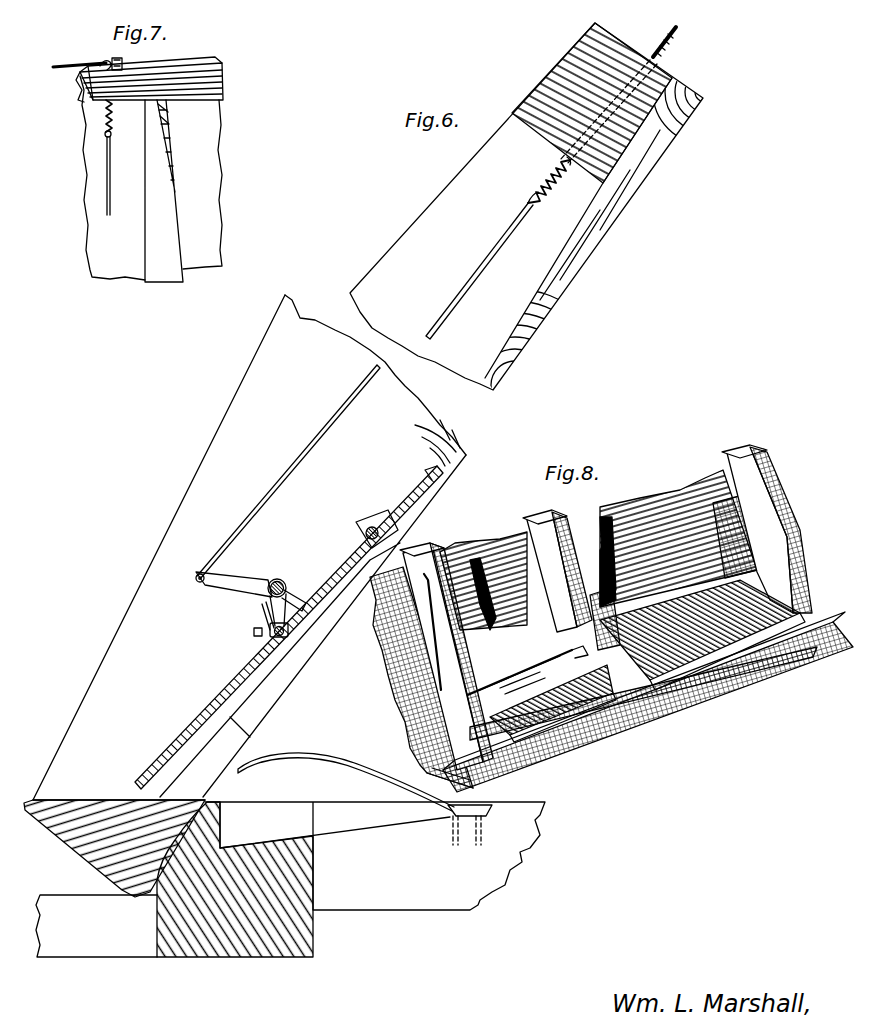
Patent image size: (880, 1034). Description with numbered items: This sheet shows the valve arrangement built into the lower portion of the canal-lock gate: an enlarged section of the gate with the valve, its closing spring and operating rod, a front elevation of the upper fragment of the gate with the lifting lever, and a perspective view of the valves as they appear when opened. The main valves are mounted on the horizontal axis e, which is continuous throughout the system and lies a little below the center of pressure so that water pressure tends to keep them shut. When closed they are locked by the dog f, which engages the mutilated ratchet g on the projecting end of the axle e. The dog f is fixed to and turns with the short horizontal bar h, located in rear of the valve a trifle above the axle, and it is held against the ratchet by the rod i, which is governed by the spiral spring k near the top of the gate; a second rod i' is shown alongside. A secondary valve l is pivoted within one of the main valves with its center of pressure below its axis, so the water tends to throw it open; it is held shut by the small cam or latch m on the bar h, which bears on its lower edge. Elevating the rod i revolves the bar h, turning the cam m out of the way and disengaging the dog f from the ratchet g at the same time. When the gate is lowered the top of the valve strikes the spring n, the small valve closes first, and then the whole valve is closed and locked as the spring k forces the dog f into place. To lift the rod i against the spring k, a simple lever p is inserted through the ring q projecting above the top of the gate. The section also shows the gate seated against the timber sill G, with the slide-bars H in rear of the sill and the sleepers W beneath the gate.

In FIG. 7, the lever p is at (79, 58).
In FIG. 7, the ring q is at (111, 55).
In FIG. 7, the spiral spring k is at (113, 118).
In FIG. 6, the spiral spring k is at (553, 180).
In FIG. 7, the rod i is at (113, 176).
In FIG. 6, the rod i is at (479, 270).
In FIG. 8, the rod i is at (437, 632).
In FIG. 8, the rod i' is at (288, 473).
In FIG. 6, the mutilated ratchet g is at (623, 95).
In FIG. 8, the mutilated ratchet g is at (352, 675).
In FIG. 8, the short horizontal bar h is at (392, 613).
In FIG. 8, the cam m is at (413, 640).
In FIG. 8, the dog f is at (260, 616).
In FIG. 8, the horizontal axis e is at (372, 656).
In FIG. 8, the secondary valve l is at (353, 627).
In FIG. 8, the spring n is at (365, 793).
In FIG. 8, the sill G is at (235, 879).
In FIG. 8, the slide-bars H is at (110, 926).
In FIG. 8, the sleepers W is at (380, 836).